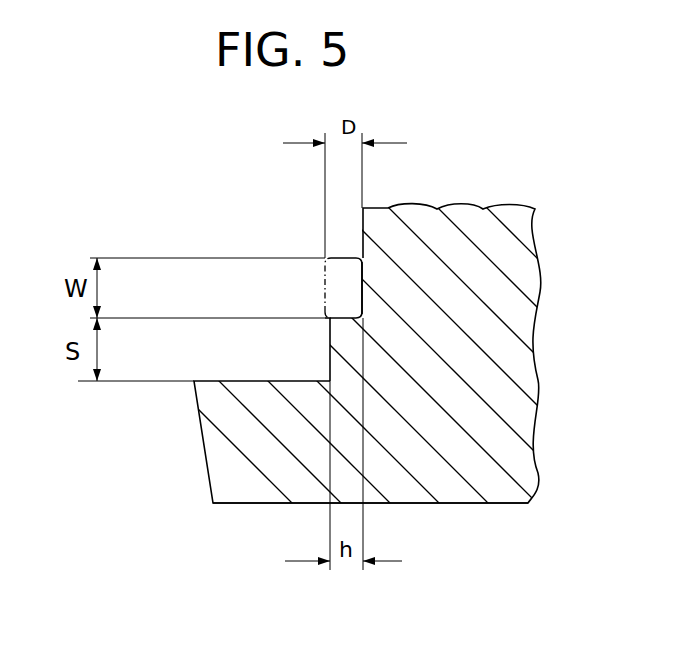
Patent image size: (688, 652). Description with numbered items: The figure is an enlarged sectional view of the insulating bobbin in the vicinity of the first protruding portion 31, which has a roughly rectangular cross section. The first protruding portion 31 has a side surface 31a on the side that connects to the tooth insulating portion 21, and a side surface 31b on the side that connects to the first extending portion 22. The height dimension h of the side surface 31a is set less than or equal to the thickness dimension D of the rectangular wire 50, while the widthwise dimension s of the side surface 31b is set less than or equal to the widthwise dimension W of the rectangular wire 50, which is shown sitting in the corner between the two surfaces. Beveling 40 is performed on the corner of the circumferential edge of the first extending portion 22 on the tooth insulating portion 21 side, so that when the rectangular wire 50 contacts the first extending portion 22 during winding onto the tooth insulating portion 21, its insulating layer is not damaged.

The tooth insulating portion 21 is at (363, 227).
The first extending portion 22 is at (243, 503).
The first protruding portion 31 is at (330, 338).
The side surface 31a is at (362, 283).
The side surface 31b is at (328, 360).
The beveling 40 is at (197, 381).
The rectangular wire 50 is at (343, 246).